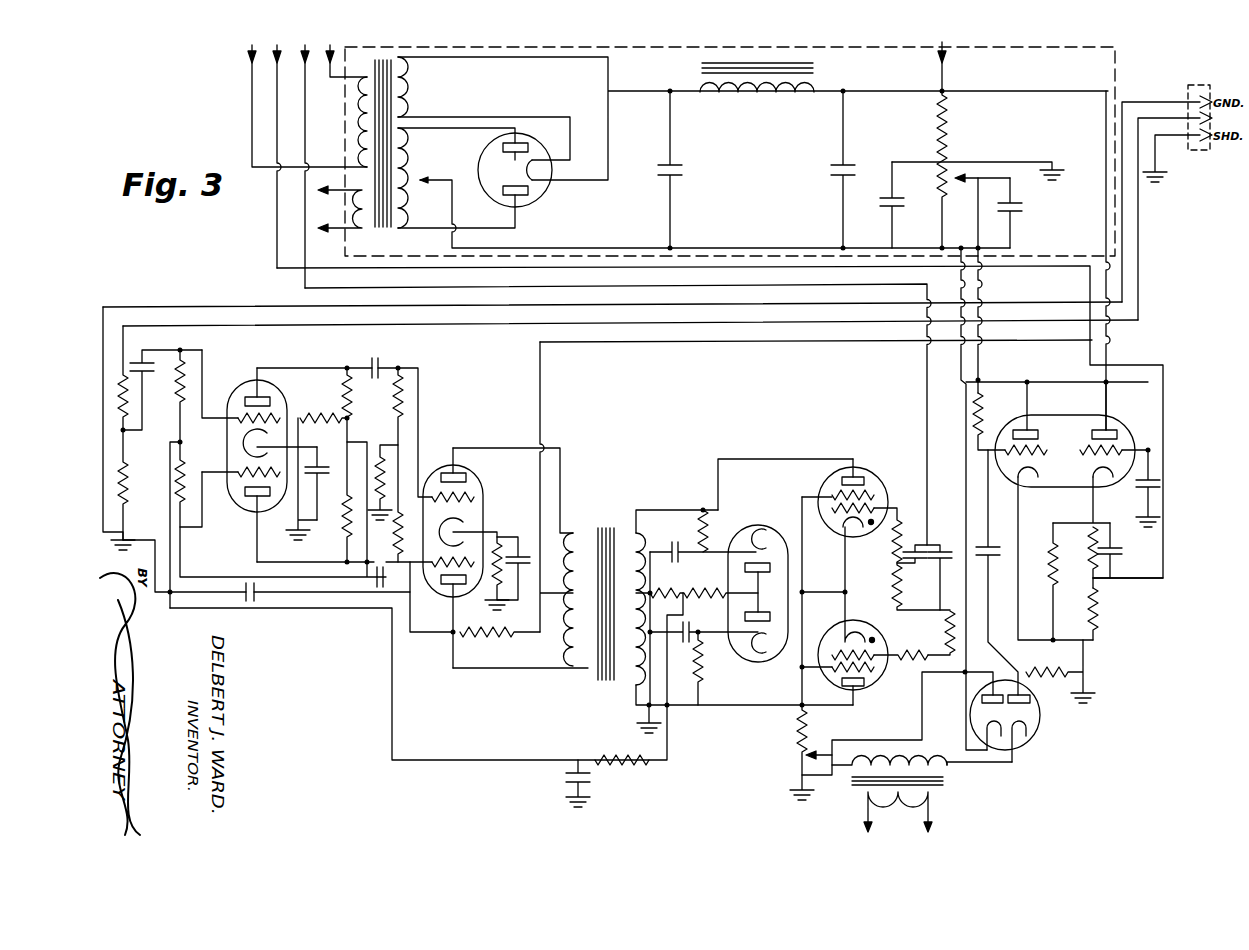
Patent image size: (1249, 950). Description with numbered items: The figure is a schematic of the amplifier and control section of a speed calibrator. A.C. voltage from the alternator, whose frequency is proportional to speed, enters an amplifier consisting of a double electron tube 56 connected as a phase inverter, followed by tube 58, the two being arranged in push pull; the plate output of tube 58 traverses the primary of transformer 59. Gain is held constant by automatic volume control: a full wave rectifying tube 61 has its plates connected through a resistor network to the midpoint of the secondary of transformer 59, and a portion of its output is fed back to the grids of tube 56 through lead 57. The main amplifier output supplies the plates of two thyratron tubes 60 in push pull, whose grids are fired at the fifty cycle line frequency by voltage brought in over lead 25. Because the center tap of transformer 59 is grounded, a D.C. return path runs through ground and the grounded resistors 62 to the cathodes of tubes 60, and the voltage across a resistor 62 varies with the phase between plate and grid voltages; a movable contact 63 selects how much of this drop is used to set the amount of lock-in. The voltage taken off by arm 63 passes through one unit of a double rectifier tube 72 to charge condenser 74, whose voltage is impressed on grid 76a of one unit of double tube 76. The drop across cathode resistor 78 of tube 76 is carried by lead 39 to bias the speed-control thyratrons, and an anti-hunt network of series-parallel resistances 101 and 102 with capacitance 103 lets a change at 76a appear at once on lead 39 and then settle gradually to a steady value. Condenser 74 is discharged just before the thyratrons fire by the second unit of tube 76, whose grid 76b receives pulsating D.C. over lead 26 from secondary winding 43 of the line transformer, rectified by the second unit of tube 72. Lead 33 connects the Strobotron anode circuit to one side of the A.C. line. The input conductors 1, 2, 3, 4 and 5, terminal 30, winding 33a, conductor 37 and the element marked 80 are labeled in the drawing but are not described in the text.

The input conductor 1 is at (301, 106).
The input conductor 2 is at (270, 156).
The input conductor 3 is at (299, 166).
The input conductor 4 is at (341, 67).
The input conductor with potentiometer 5 is at (967, 145).
The lead 25 is at (305, 261).
The lead 26 is at (1000, 765).
The terminal 30 is at (1185, 216).
The lead 33 is at (302, 144).
The primary winding 33a is at (252, 96).
The conductor 37 is at (790, 459).
The lead 39 is at (277, 245).
The secondary winding 43 is at (950, 776).
The double electron tube 56 is at (235, 384).
The lead 57 is at (330, 612).
The tube 58 is at (440, 463).
The transformer 59 is at (608, 526).
The thyratron tubes 60 is at (880, 478).
The full wave rectifying tube 61 is at (748, 528).
The grounded resistors 62 is at (800, 760).
The movable contact 63 is at (806, 752).
The double rectifier tube 72 is at (1040, 736).
The condenser 74 is at (1160, 486).
The double tube 76 is at (1068, 418).
The grid 76a is at (1112, 421).
The grid 76b is at (1000, 426).
The cathode resistor 78 is at (1105, 609).
The filter choke 80 is at (769, 177).
The resistance 101 is at (1093, 560).
The resistance 102 is at (1053, 576).
The capacitance 103 is at (1112, 551).